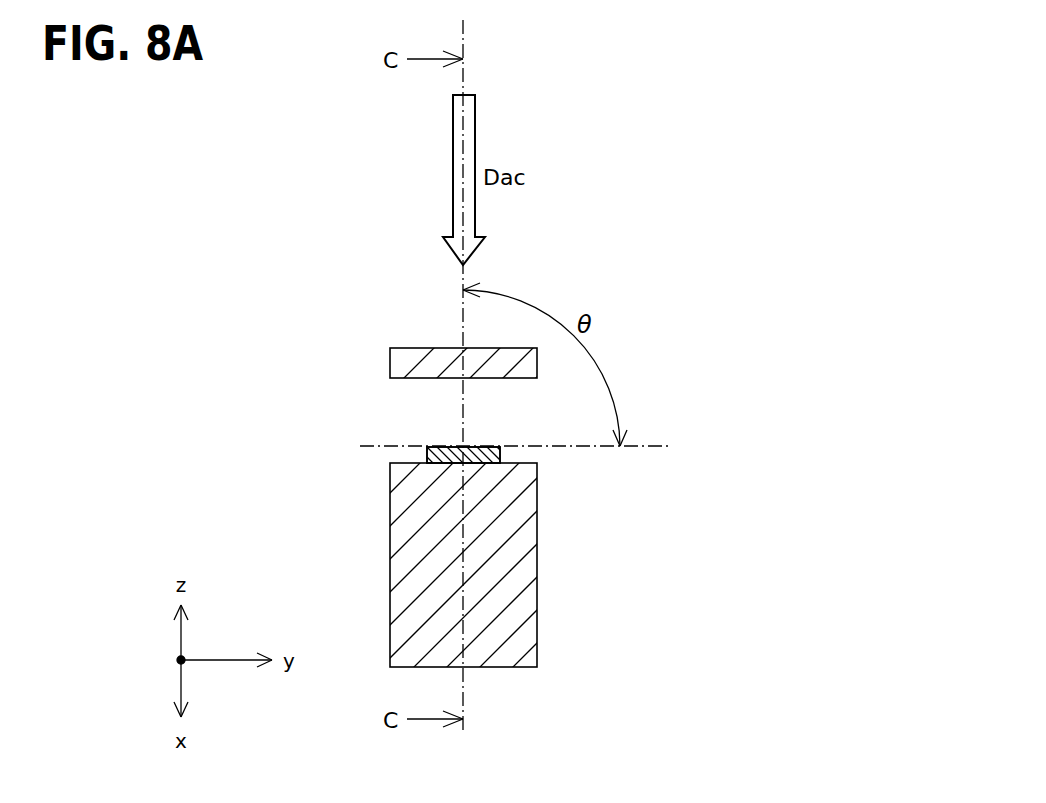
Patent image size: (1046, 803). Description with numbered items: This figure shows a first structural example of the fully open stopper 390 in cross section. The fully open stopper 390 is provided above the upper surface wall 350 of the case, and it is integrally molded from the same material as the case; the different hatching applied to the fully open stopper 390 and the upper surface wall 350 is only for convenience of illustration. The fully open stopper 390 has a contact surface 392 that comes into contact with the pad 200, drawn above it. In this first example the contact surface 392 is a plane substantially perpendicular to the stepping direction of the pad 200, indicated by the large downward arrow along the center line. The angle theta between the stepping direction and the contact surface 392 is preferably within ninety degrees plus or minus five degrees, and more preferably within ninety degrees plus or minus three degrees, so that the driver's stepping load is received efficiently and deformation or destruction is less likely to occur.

The pad 200 is at (407, 348).
The fully open stopper 390 is at (500, 452).
The contact surface 392 is at (440, 447).
The upper surface wall 350 is at (522, 568).